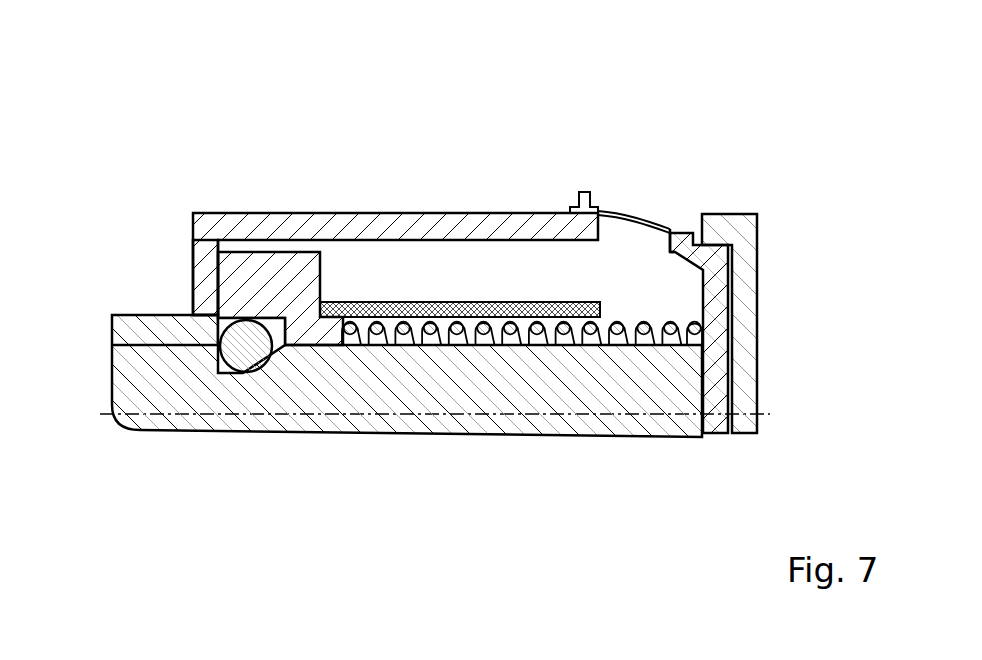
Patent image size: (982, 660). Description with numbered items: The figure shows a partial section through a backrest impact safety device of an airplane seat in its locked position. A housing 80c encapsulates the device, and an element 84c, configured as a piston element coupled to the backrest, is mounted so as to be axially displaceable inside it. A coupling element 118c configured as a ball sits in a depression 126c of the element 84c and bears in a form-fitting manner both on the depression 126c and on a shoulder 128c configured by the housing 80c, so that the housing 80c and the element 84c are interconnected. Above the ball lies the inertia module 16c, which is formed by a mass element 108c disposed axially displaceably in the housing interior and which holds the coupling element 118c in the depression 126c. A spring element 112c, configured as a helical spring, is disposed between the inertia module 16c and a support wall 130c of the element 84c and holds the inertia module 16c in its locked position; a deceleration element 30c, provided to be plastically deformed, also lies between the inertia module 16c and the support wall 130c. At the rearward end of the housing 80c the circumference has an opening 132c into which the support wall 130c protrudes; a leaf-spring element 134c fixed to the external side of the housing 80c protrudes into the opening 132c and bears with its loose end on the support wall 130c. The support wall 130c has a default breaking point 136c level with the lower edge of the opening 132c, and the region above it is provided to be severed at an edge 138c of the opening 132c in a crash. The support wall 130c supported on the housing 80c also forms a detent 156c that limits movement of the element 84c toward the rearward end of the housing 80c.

The inertia module 16c is at (263, 196).
The shoulder 128c is at (226, 288).
The mass element 108c is at (289, 282).
The housing 80c is at (400, 228).
The deceleration element 30c is at (458, 302).
The edge 138c is at (601, 230).
The leaf-spring element 134c is at (636, 212).
The opening 132c is at (680, 202).
The detent 156c is at (734, 300).
The support wall 130c is at (712, 375).
The coupling element 118c is at (250, 343).
The depression 126c is at (231, 374).
The element 84c is at (365, 383).
The spring element 112c is at (543, 347).
The default breaking point 136c is at (662, 254).